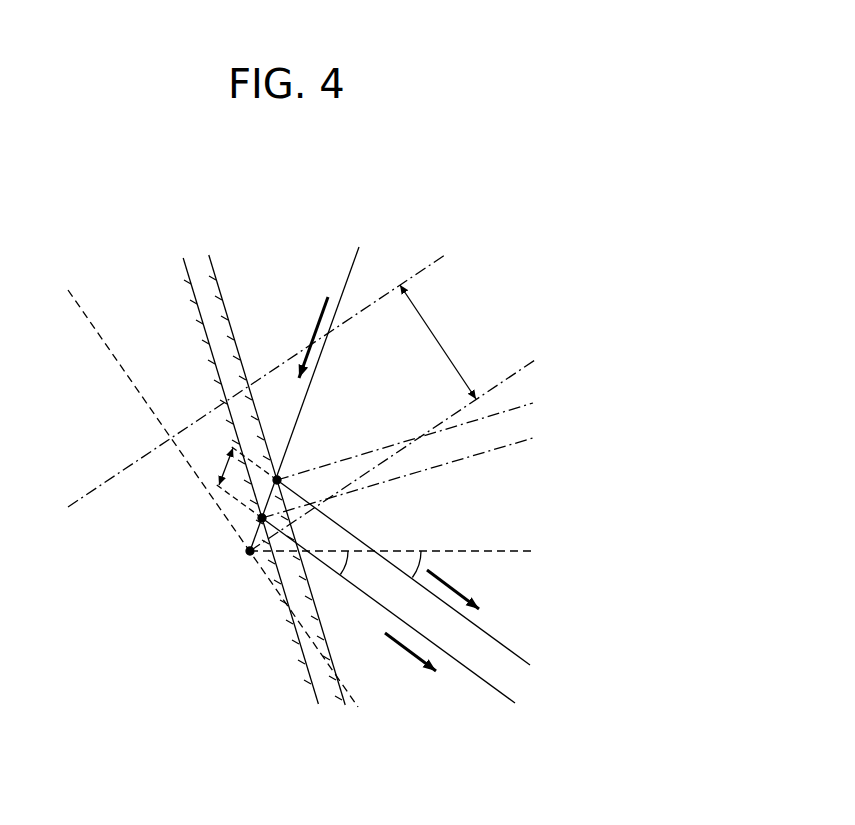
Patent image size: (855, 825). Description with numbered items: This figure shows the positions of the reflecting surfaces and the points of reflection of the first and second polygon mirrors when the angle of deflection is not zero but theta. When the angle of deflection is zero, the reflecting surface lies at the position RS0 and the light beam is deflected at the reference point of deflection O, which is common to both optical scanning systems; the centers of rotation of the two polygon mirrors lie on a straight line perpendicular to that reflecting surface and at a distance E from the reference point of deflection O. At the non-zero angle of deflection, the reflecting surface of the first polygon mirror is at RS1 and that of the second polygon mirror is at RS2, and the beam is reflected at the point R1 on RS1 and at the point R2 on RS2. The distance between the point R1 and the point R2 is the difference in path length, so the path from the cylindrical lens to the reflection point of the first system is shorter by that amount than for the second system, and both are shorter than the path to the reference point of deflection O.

The reflecting surface position at zero deflection RS0 is at (84, 312).
The reflecting surface of the first polygon mirror RS1 is at (217, 283).
The reflecting surface of the second polygon mirror RS2 is at (186, 262).
The point of reflection on RS1 R1 is at (277, 480).
The point of reflection on RS2 R2 is at (262, 518).
The reference point of deflection O is at (250, 551).
The distance from the reference point of deflection to the straight line through the E is at (392, 418).